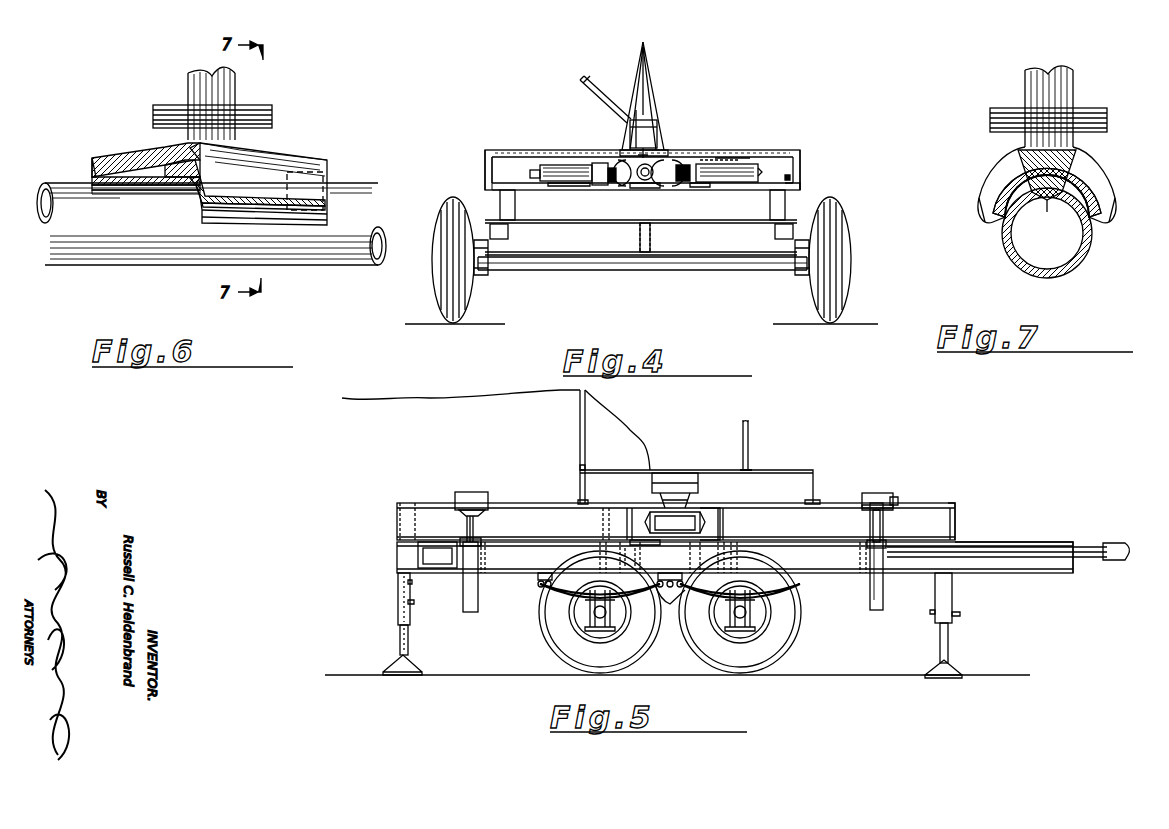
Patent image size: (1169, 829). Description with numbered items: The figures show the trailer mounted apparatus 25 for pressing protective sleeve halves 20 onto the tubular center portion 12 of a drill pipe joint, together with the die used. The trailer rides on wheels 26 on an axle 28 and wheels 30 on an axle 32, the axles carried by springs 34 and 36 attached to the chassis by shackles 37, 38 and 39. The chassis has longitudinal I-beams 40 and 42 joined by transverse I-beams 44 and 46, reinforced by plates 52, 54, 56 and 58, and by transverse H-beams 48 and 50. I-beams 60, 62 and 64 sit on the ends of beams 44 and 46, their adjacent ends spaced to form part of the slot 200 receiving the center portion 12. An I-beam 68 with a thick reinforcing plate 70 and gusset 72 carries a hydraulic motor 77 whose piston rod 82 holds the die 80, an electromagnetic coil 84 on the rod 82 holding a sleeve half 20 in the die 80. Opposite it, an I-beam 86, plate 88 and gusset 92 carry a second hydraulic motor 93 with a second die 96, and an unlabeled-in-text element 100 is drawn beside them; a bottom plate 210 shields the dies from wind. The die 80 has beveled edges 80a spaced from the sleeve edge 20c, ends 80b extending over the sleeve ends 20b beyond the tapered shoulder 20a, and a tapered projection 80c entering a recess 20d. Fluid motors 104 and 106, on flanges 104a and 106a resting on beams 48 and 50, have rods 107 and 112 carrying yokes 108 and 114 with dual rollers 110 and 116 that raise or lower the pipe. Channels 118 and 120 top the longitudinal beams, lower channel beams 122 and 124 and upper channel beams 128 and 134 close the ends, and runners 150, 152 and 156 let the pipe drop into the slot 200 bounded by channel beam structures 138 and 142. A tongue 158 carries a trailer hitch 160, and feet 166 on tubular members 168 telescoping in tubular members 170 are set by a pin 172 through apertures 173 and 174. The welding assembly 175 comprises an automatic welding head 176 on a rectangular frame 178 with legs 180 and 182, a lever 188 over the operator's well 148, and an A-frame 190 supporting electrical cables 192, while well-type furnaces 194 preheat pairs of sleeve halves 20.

In FIG. 6, the tubular center portion 12 is at (105, 250).
In FIG. 7, the tubular center portion 12 is at (1030, 262).
In FIG. 4, the tubular center portion 12 is at (642, 185).
In FIG. 6, the semicircular sleeve half 20 is at (200, 205).
In FIG. 7, the semicircular sleeve half 20 is at (1100, 220).
In FIG. 6, the tapered shoulder 20a is at (125, 195).
In FIG. 6, the sleeve half end 20b is at (112, 195).
In FIG. 6, the sleeve half edge 20c is at (250, 222).
In FIG. 6, the recess 20d is at (180, 180).
In FIG. 7, the recess 20d is at (1052, 205).
In FIG. 4, the trailer mounted apparatus 25 is at (479, 142).
In FIG. 5, the trailer mounted apparatus 25 is at (382, 503).
In FIG. 4, the wheels 26 is at (440, 205).
In FIG. 5, the wheels 26 is at (792, 638).
In FIG. 4, the axle 28 is at (598, 266).
In FIG. 5, the axle 28 is at (746, 614).
In FIG. 5, the wheels 30 is at (572, 650).
In FIG. 5, the axle 32 is at (594, 612).
In FIG. 4, the springs 34 is at (508, 240).
In FIG. 5, the springs 34 is at (862, 598).
In FIG. 5, the springs 36 is at (560, 595).
In FIG. 5, the shackle 37 is at (870, 586).
In FIG. 5, the shackle 38 is at (672, 604).
In FIG. 5, the shackle 39 is at (536, 582).
In FIG. 4, the longitudinal I-beam 40 is at (790, 202).
In FIG. 4, the longitudinal I-beam 42 is at (500, 198).
In FIG. 5, the longitudinal I-beam 42 is at (667, 557).
In FIG. 4, the transverse I-beam 44 is at (515, 223).
In FIG. 5, the transverse I-beam 44 is at (738, 557).
In FIG. 5, the transverse I-beam 46 is at (606, 559).
In FIG. 5, the transverse H-beam 48 is at (860, 558).
In FIG. 5, the transverse H-beam 50 is at (486, 560).
In FIG. 4, the reinforcing plate 52 is at (712, 228).
In FIG. 5, the reinforcing plate 52 is at (715, 552).
In FIG. 5, the reinforcing plate 54 is at (726, 558).
In FIG. 5, the reinforcing plate 56 is at (637, 559).
In FIG. 5, the reinforcing plate 58 is at (603, 534).
In FIG. 4, the I-beam 60 is at (501, 173).
In FIG. 5, the I-beam 60 is at (725, 528).
In FIG. 5, the I-beam 62 is at (626, 522).
In FIG. 4, the I-beam 64 is at (785, 179).
In FIG. 4, the I-beam 68 is at (728, 158).
In FIG. 4, the reinforcing plate 70 is at (716, 160).
In FIG. 4, the gusset 72 is at (768, 174).
In FIG. 4, the hydraulic motor 77 is at (735, 190).
In FIG. 6, the die 80 is at (300, 152).
In FIG. 7, the die 80 is at (1100, 175).
In FIG. 4, the die 80 is at (685, 186).
In FIG. 6, the die edges 80a is at (280, 222).
In FIG. 7, the die edges 80a is at (992, 222).
In FIG. 6, the die ends 80b is at (90, 160).
In FIG. 6, the tapered projection 80c is at (150, 145).
In FIG. 7, the tapered projection 80c is at (1020, 150).
In FIG. 6, the piston rod 82 is at (232, 78).
In FIG. 7, the piston rod 82 is at (1072, 82).
In FIG. 6, the electromagnetic coil 84 is at (158, 104).
In FIG. 7, the electromagnetic coil 84 is at (1005, 107).
In FIG. 4, the electromagnetic coil 84 is at (703, 190).
In FIG. 4, the I-beam 86 is at (566, 188).
In FIG. 4, the reinforcing plate 88 is at (596, 190).
In FIG. 5, the reinforcing plate 88 is at (714, 514).
In FIG. 4, the reinforcing gusset 92 is at (540, 172).
In FIG. 4, the second hydraulic motor 93 is at (545, 185).
In FIG. 4, the second die 96 is at (620, 190).
In FIG. 5, the second die 96 is at (675, 522).
In FIG. 4, the block 100 is at (612, 186).
In FIG. 4, the fluid motor 104 is at (652, 240).
In FIG. 5, the fluid motor 104 is at (884, 598).
In FIG. 5, the flange 104a is at (886, 552).
In FIG. 5, the fluid motor 106 is at (470, 610).
In FIG. 5, the flange 106a is at (482, 540).
In FIG. 5, the rod 107 is at (884, 524).
In FIG. 5, the yoke 108 is at (896, 496).
In FIG. 4, the dual rollers 110 is at (660, 233).
In FIG. 5, the dual rollers 110 is at (886, 492).
In FIG. 5, the rod 112 is at (475, 530).
In FIG. 5, the yoke 114 is at (488, 502).
In FIG. 5, the dual rollers 116 is at (482, 492).
In FIG. 4, the longitudinal channel 118 is at (800, 166).
In FIG. 4, the longitudinal channel 120 is at (485, 166).
In FIG. 5, the rear lower transverse channel beam 122 is at (397, 558).
In FIG. 5, the front lower transverse channel beam 124 is at (960, 568).
In FIG. 5, the upper rear channel beam 128 is at (397, 528).
In FIG. 5, the front upper channel beam 134 is at (955, 522).
In FIG. 5, the channel beam structure 138 is at (560, 520).
In FIG. 5, the channel beam structure 142 is at (822, 526).
In FIG. 5, the operator's well 148 is at (862, 505).
In FIG. 4, the front runner 150 is at (778, 150).
In FIG. 4, the front runner 152 is at (546, 150).
In FIG. 5, the front runner 152 is at (952, 502).
In FIG. 5, the rear runner 156 is at (405, 502).
In FIG. 5, the tongue 158 is at (1085, 560).
In FIG. 5, the trailer hitch 160 is at (1115, 562).
In FIG. 5, the support foot 166 is at (395, 668).
In FIG. 5, the tubular member 168 is at (400, 636).
In FIG. 5, the tubular member 170 is at (398, 604).
In FIG. 5, the pin 172 is at (410, 608).
In FIG. 5, the apertures 173 is at (410, 590).
In FIG. 5, the apertures 174 is at (408, 640).
In FIG. 4, the welding assembly 175 is at (670, 85).
In FIG. 4, the automatic welding head 176 is at (657, 130).
In FIG. 5, the automatic welding head 176 is at (678, 483).
In FIG. 4, the rectangular frame 178 is at (634, 100).
In FIG. 5, the rectangular frame 178 is at (760, 470).
In FIG. 4, the legs 180 is at (660, 150).
In FIG. 4, the legs 182 is at (622, 140).
In FIG. 5, the legs 182 is at (580, 481).
In FIG. 4, the elongated lever 188 is at (597, 95).
In FIG. 5, the elongated lever 188 is at (750, 436).
In FIG. 4, the A-frame 190 is at (662, 95).
In FIG. 5, the A-frame 190 is at (580, 433).
In FIG. 5, the electrical cables 192 is at (432, 398).
In FIG. 5, the well-type furnace 194 is at (437, 555).
In FIG. 4, the slot 200 is at (658, 140).
In FIG. 4, the bottom plate 210 is at (655, 190).
In FIG. 5, the bottom plate 210 is at (650, 541).